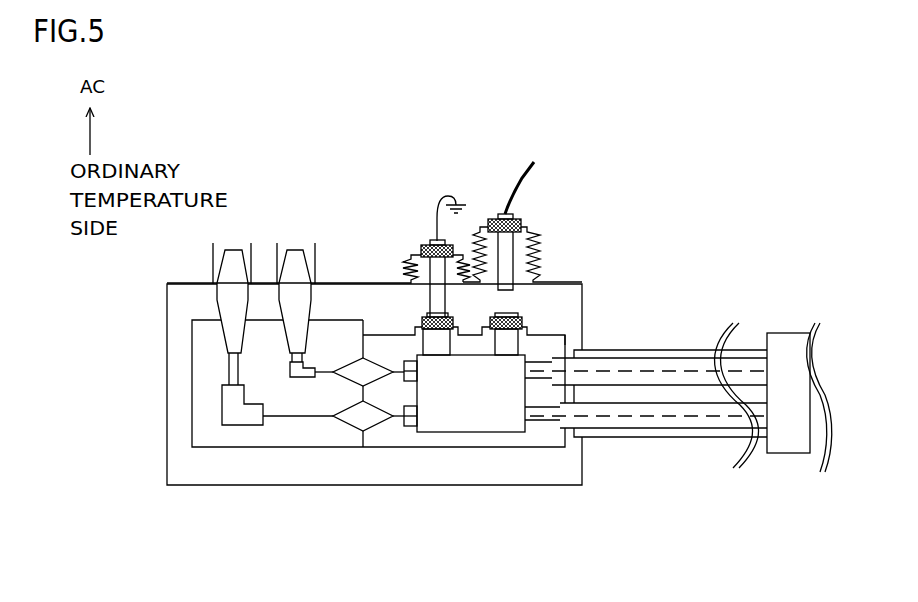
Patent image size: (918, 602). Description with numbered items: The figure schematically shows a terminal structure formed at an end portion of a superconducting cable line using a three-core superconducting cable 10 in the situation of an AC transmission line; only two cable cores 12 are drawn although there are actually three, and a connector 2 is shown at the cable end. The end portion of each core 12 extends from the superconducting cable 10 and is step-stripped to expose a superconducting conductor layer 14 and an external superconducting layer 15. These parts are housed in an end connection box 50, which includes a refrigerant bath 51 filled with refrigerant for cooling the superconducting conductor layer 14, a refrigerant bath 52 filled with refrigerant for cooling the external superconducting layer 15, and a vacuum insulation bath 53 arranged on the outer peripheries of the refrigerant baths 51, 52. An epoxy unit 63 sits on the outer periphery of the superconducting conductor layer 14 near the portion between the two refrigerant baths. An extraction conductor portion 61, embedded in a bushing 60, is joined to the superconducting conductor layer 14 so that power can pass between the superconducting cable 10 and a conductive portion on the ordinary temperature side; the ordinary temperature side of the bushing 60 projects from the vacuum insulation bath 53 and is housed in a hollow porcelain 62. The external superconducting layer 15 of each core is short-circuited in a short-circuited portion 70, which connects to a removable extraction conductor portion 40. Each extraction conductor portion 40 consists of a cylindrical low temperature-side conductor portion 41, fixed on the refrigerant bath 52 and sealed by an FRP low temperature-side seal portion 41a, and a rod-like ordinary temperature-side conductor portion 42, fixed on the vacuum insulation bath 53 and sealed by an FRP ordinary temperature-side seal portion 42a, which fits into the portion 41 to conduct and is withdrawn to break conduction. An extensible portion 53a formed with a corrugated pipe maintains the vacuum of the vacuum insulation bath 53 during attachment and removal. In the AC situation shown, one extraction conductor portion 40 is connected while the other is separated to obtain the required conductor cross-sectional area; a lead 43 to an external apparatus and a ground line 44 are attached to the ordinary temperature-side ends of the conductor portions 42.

The connector 2 is at (799, 362).
The superconducting cable 10 is at (713, 280).
The cable core 12 is at (691, 512).
The superconducting conductor layer 14 is at (255, 471).
The external superconducting layer 15 is at (572, 460).
The extraction conductor portion 40 is at (613, 207).
The low temperature-side conductor portion 41 is at (508, 313).
The low temperature-side seal portion 41a is at (569, 306).
The ordinary temperature-side conductor portion 42 is at (536, 237).
The ordinary temperature-side seal portion 42a is at (410, 266).
The lead 43 is at (554, 185).
The ground line 44 is at (435, 196).
The end connection box 50 is at (269, 551).
The refrigerant bath 51 is at (346, 383).
The refrigerant bath 52 is at (464, 432).
The vacuum insulation bath 53 is at (333, 395).
The extensible portion 53a is at (367, 241).
The bushing 60 is at (134, 313).
The extraction conductor portion 61 is at (186, 377).
The hollow porcelain 62 is at (232, 260).
The epoxy unit 63 is at (353, 442).
The short-circuited portion 70 is at (474, 447).